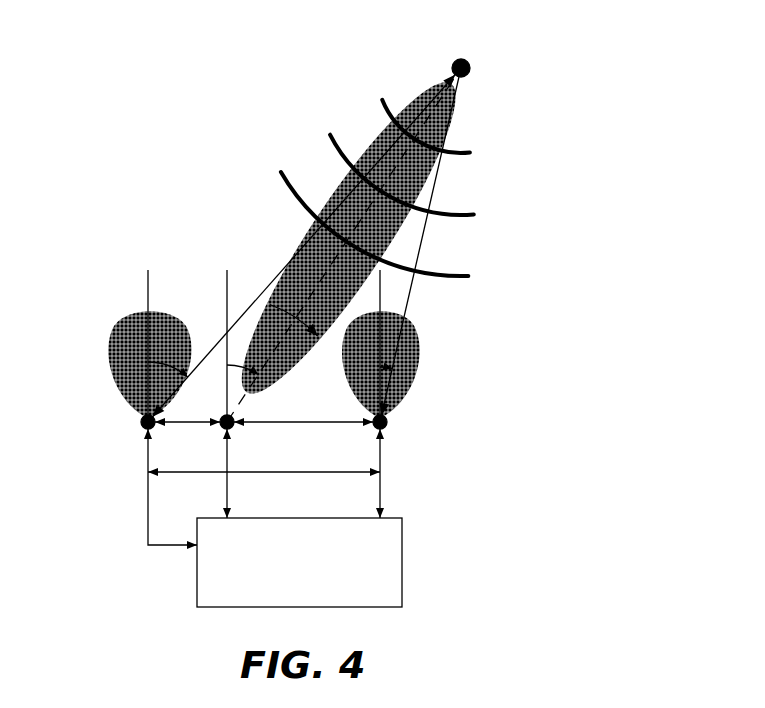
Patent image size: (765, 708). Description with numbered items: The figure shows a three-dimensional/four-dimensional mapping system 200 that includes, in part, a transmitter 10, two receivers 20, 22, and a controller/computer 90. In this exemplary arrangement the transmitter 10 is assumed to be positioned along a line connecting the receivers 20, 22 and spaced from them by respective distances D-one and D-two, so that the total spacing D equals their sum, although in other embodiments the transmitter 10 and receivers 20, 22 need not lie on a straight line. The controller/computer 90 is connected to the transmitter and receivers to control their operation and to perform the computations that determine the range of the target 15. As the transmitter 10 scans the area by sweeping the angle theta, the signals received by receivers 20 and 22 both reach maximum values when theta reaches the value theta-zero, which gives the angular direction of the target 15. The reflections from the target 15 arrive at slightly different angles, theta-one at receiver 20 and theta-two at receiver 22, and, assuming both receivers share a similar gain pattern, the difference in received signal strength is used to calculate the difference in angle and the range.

The mapping system 200 is at (580, 138).
The target 15 is at (460, 58).
The receiver 20 is at (141, 421).
The transmitter 10 is at (233, 413).
The receiver 22 is at (388, 425).
The controller/computer 90 is at (402, 535).